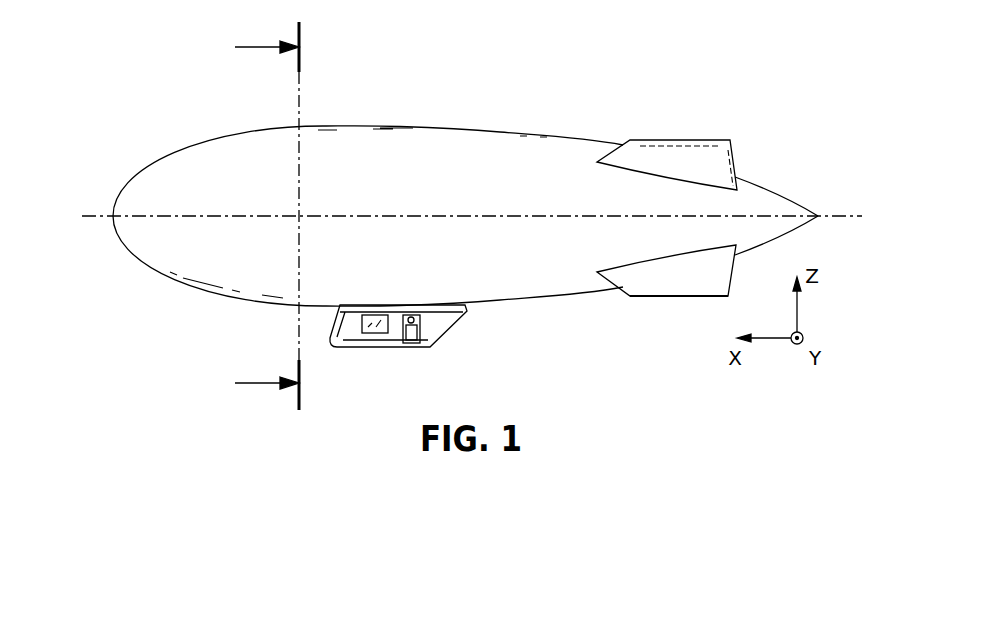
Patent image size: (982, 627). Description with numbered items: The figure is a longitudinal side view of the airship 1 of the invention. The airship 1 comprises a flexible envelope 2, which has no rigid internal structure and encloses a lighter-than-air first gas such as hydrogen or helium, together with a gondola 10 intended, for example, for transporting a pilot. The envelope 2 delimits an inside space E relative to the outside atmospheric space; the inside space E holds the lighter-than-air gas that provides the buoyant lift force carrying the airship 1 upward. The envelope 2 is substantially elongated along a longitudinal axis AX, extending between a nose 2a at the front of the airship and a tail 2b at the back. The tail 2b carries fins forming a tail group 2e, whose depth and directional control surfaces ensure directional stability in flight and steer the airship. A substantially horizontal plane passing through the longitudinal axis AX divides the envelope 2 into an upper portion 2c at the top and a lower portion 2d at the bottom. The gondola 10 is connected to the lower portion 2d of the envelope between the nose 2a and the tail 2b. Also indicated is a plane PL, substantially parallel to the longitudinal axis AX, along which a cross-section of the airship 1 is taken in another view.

The airship 1 is at (480, 70).
The flexible envelope 2 is at (503, 165).
The nose 2a is at (117, 197).
The tail 2b is at (791, 200).
The upper portion 2c is at (380, 158).
The lower portion 2d is at (512, 273).
The tail group 2e is at (700, 158).
The gondola 10 is at (380, 342).
The inside space E is at (562, 170).
The plane PL is at (303, 97).
The longitudinal axis AX is at (843, 215).